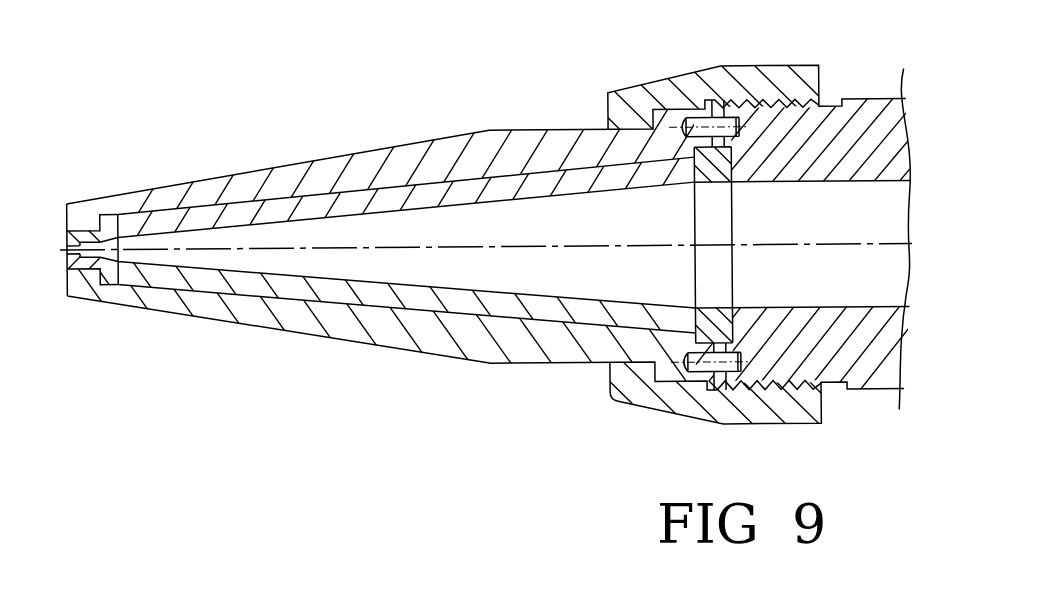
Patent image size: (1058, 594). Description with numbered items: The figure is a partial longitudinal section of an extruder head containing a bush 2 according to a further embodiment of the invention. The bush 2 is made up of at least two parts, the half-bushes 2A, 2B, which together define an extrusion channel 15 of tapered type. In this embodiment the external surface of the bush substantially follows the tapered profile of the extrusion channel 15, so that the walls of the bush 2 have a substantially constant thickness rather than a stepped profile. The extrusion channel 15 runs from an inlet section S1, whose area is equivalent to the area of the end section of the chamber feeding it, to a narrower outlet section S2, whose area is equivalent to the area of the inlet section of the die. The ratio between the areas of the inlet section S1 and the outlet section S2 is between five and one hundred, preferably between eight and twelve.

The bush 2 is at (240, 152).
The half-bush 2A is at (497, 150).
The half-bush 2B is at (428, 338).
The extrusion channel 15 is at (408, 228).
The inlet section S1 is at (695, 268).
The outlet section S2 is at (120, 253).